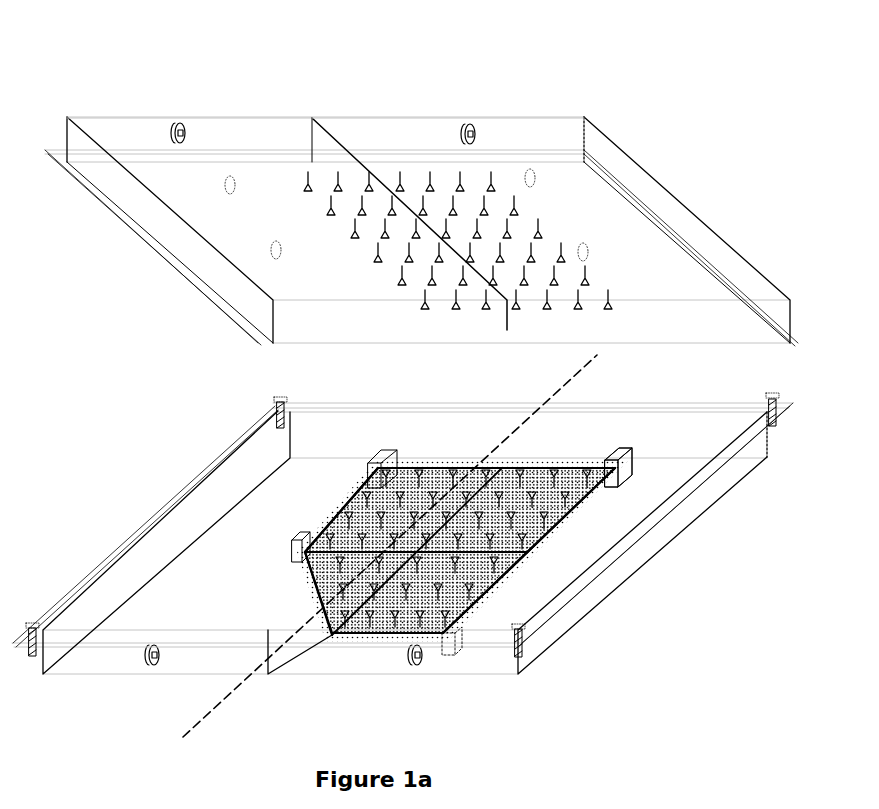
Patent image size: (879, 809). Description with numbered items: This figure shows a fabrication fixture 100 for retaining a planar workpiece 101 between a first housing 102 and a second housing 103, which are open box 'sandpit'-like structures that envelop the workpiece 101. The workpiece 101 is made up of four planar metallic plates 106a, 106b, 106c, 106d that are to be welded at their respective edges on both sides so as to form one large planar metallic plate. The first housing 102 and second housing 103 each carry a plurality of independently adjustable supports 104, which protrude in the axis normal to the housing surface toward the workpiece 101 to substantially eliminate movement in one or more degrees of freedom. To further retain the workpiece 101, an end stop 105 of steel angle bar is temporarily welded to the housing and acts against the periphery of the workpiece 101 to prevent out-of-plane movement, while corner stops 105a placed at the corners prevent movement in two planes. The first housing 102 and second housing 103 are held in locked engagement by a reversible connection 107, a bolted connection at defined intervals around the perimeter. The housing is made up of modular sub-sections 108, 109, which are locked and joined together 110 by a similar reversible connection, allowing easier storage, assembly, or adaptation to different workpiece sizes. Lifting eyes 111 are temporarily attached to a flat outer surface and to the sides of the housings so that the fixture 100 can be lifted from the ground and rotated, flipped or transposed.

The fabrication fixture 100 is at (401, 92).
The workpiece 101 is at (545, 567).
The first housing 102 is at (707, 211).
The second housing 103 is at (558, 634).
The independently adjustable supports 104 is at (585, 268).
The end stop 105 is at (290, 548).
The corner stops 105a is at (369, 468).
The planar metallic plate 106a is at (318, 606).
The planar metallic plate 106b is at (345, 507).
The planar metallic plate 106c is at (592, 483).
The planar metallic plate 106d is at (482, 614).
The reversible connection 107 is at (779, 414).
The modular sub-section 108 is at (293, 118).
The modular sub-section 109 is at (355, 118).
The join between modular sub-sections 110 is at (312, 136).
The lifting eyes 111 is at (547, 168).